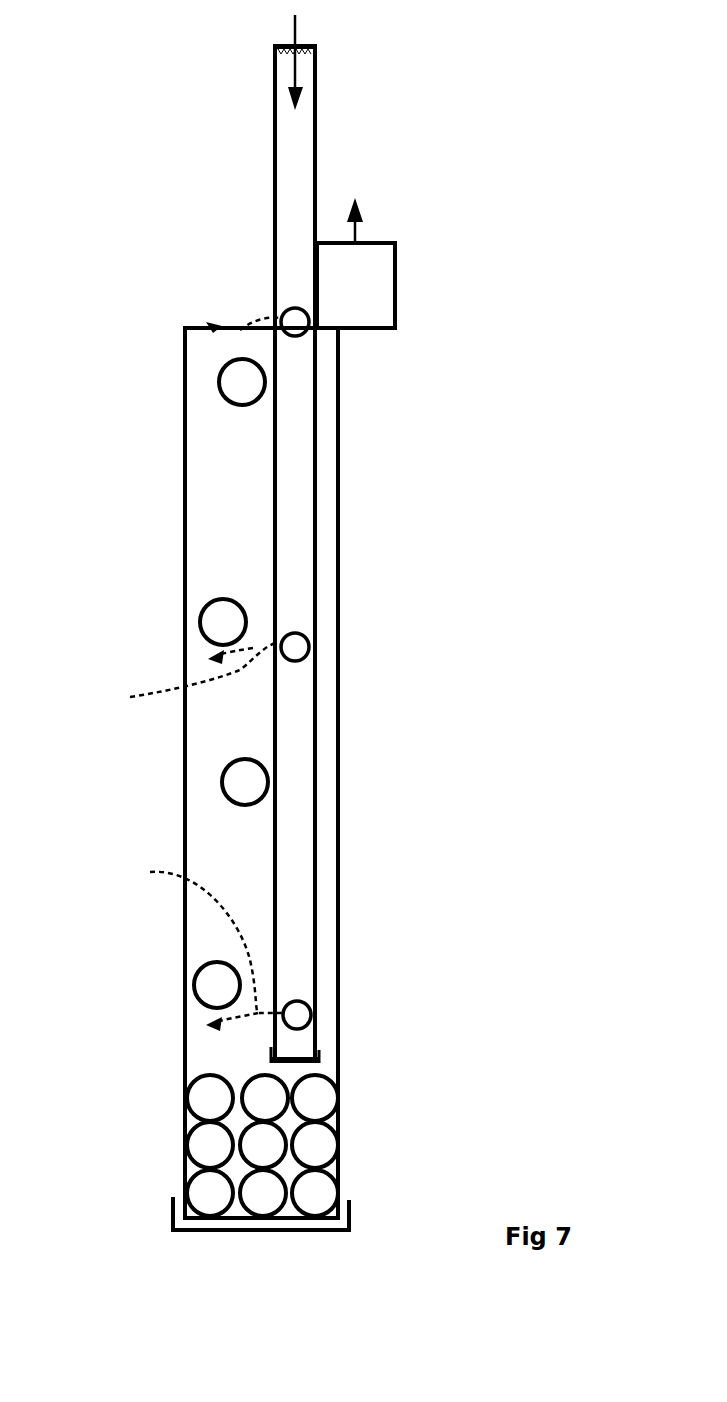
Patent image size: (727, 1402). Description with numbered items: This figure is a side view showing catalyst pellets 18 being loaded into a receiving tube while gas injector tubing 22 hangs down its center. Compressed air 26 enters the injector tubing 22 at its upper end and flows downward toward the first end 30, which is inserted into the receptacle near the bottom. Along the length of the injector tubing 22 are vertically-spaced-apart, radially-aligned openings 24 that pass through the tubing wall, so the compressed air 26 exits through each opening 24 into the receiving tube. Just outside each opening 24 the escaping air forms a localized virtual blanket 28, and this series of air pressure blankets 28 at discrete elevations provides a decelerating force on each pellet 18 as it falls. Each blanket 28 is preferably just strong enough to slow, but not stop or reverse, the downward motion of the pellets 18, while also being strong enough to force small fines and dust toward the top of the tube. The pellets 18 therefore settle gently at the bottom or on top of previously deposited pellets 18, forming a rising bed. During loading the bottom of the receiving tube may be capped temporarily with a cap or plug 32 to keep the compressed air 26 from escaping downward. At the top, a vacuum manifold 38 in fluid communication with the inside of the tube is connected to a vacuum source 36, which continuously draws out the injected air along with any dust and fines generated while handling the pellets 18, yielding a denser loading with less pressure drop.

The catalyst pellets 18 is at (220, 378).
The gas injector tubing 22 is at (273, 195).
The openings 24 is at (307, 650).
The compressed air 26 is at (292, 42).
The virtual blankets 28 is at (191, 674).
The first end 30 is at (322, 1058).
The cap or plug 32 is at (350, 1222).
The vacuum source 36 is at (358, 232).
The vacuum manifold 38 is at (396, 289).